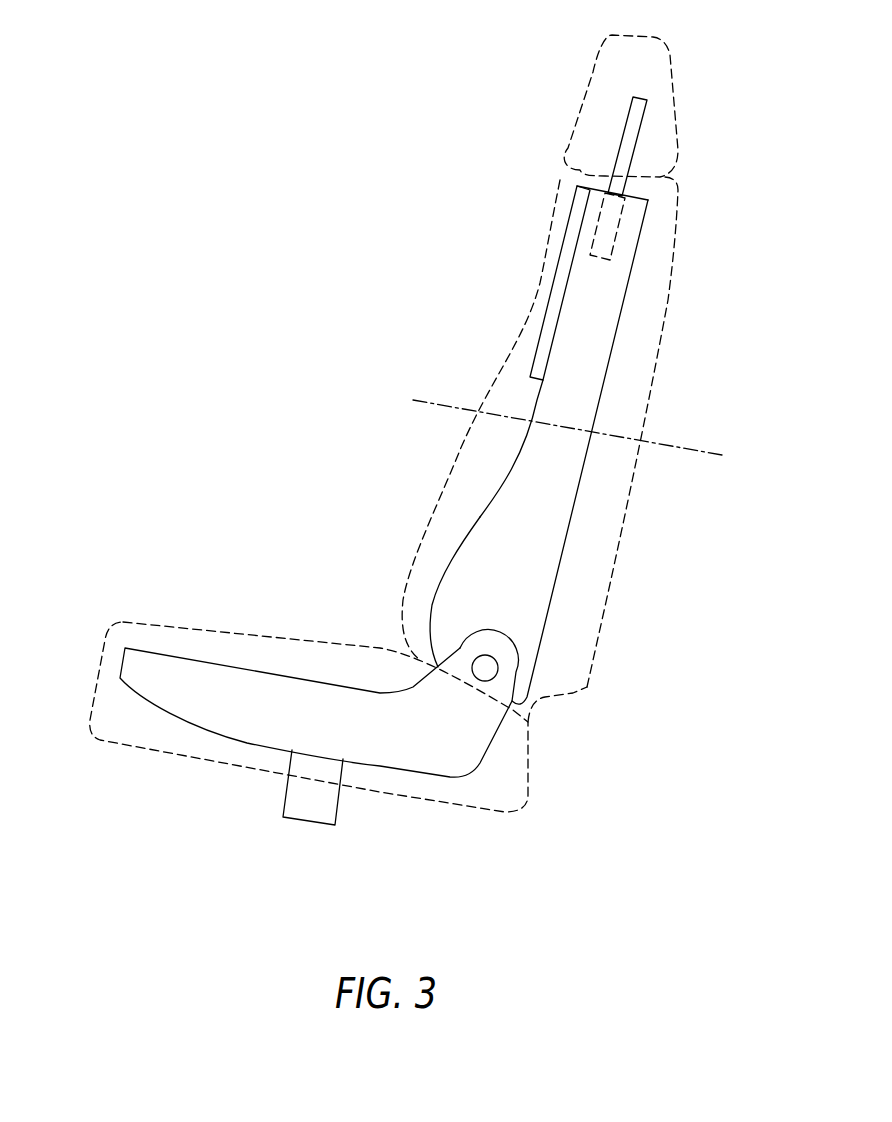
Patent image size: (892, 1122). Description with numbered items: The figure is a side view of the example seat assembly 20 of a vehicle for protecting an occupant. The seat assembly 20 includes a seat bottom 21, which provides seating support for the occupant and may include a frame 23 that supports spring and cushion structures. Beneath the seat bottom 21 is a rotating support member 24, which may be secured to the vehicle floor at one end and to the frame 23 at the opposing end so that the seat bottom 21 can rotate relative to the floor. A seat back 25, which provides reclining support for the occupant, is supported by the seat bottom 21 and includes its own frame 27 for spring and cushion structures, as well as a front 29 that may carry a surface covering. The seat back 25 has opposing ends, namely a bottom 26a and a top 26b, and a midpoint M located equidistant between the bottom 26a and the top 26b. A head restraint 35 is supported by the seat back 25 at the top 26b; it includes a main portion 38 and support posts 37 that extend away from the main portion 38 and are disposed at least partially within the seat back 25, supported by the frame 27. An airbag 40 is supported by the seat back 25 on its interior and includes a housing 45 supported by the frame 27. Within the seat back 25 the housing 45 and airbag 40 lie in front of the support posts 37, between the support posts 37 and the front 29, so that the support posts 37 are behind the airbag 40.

The seat assembly 20 is at (246, 63).
The seat bottom 21 is at (293, 647).
The frame 23 is at (247, 712).
The rotating support member 24 is at (322, 805).
The seat back 25 is at (590, 588).
The bottom 26a is at (562, 673).
The top 26b is at (653, 197).
The frame 27 is at (562, 453).
The front 29 is at (447, 478).
The head restraint 35 is at (608, 88).
The support posts 37 is at (612, 227).
The main portion 38 is at (660, 147).
The airbag 40 is at (548, 335).
The housing 45 is at (557, 252).
The midpoint M is at (703, 452).